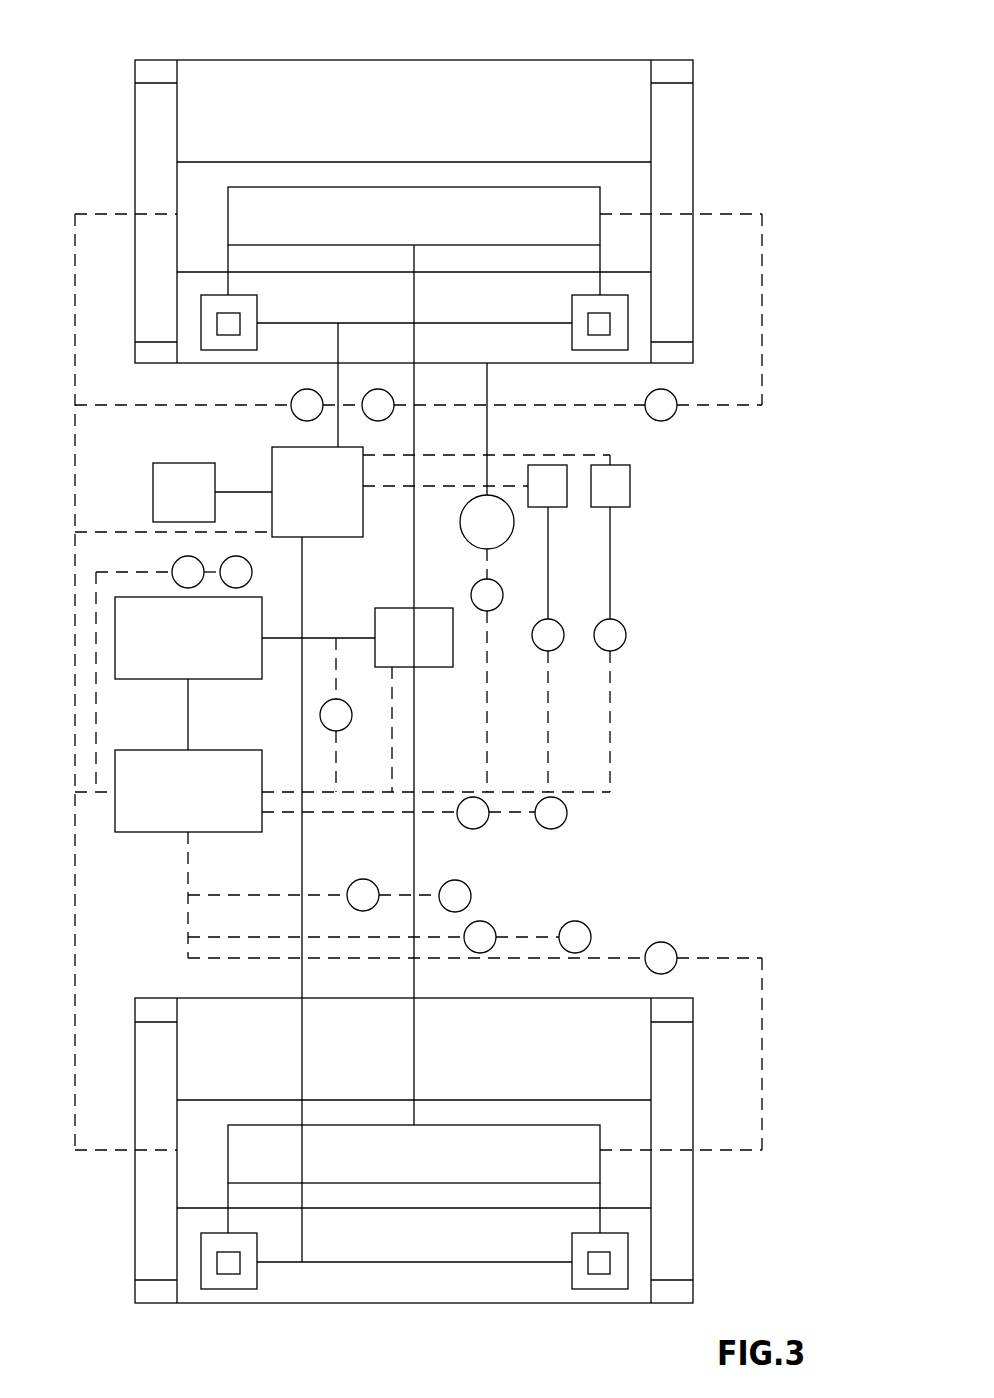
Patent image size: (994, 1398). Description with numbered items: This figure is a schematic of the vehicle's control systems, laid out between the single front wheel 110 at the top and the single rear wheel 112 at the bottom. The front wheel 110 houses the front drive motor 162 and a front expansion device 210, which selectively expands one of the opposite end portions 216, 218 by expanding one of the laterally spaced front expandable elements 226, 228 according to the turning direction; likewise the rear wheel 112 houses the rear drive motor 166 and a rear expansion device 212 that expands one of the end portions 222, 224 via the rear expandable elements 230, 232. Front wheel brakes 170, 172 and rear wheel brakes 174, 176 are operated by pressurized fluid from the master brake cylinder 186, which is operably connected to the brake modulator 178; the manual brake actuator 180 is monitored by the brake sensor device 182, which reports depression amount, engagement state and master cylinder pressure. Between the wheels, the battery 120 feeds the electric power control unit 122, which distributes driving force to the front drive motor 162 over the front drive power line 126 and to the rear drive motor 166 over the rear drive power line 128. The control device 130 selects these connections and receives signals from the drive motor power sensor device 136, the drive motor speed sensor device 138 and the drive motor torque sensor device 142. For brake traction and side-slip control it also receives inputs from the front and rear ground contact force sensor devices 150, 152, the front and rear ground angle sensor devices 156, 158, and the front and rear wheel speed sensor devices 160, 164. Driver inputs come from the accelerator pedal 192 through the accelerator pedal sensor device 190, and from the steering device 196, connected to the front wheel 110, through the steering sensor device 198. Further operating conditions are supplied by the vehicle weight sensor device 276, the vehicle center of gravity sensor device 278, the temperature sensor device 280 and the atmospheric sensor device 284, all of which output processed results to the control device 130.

The front wheel 110 is at (490, 60).
The rear wheel 112 is at (430, 1305).
The battery 120 is at (138, 680).
The electric power control unit 122 is at (438, 668).
The front drive power line/cable 126 is at (414, 540).
The rear drive power line/cable 128 is at (414, 850).
The vehicle control device 130 is at (135, 833).
The drive motor power sensor device 136 is at (252, 572).
The drive motor speed sensor device 138 is at (174, 566).
The drive motor torque sensor device 142 is at (320, 715).
The front ground contact force sensor device 150 is at (307, 389).
The rear ground contact force sensor device 152 is at (478, 953).
The front ground angle sensor device 156 is at (378, 389).
The rear ground angle sensor device 158 is at (576, 953).
The front wheel speed sensor device 160 is at (667, 417).
The front drive motor 162 is at (494, 215).
The rear wheel speed sensor device 164 is at (672, 945).
The rear drive motor 166 is at (470, 1162).
The front wheel brake 170 is at (250, 297).
The front wheel brake 172 is at (571, 312).
The rear wheel brake 174 is at (220, 1290).
The rear wheel brake 176 is at (590, 1292).
The brake modulator 178 is at (272, 463).
The manual brake switch or actuator 180 is at (548, 465).
The brake sensor device 182 is at (556, 622).
The master brake cylinder 186 is at (152, 490).
The accelerator pedal sensor device 190 is at (623, 645).
The acceleration switch or actuator 192 is at (631, 498).
The steering device 196 is at (462, 535).
The steering sensor device 198 is at (490, 612).
The front expansion device 210 is at (346, 160).
The rear expansion device 212 is at (365, 1100).
The end portion of front wheel 216 is at (150, 60).
The end portion of front wheel 218 is at (672, 60).
The end portion of rear wheel 222 is at (138, 1305).
The end portion of rear wheel 224 is at (668, 1305).
The front expandable element 226 is at (150, 160).
The front expandable element 228 is at (672, 145).
The rear expandable element 230 is at (135, 1215).
The rear expandable element 232 is at (680, 1215).
The vehicle weight sensor device 276 is at (350, 885).
The vehicle center of gravity sensor device 278 is at (471, 896).
The temperature sensor device 280 is at (476, 830).
The atmospheric sensor device 284 is at (564, 825).